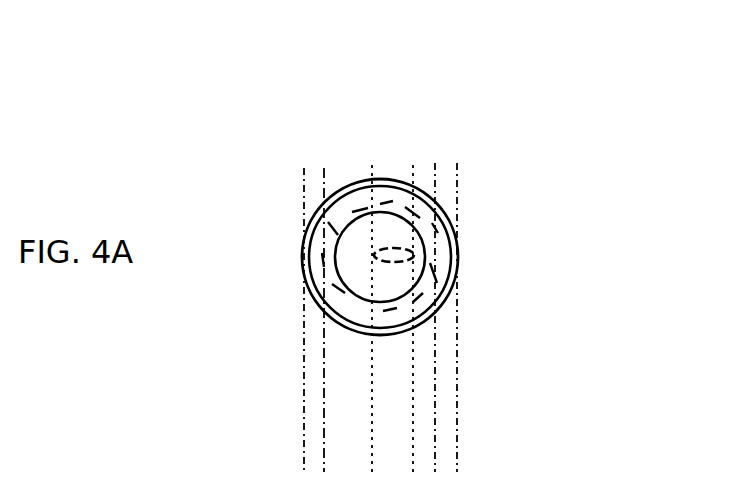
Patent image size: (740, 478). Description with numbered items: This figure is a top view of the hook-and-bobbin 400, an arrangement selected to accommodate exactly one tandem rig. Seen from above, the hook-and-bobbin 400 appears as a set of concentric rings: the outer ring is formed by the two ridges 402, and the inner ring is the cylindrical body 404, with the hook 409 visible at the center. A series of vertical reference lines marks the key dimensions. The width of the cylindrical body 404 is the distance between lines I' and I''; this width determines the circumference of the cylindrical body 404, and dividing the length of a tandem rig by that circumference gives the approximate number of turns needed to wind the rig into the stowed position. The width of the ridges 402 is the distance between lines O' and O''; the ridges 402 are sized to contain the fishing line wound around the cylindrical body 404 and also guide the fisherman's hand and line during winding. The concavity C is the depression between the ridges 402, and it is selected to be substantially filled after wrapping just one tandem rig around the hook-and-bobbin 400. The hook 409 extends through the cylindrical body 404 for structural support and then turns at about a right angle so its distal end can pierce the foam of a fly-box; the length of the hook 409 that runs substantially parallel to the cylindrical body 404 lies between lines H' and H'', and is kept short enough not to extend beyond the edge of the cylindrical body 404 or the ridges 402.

The hook-and-bobbin 400 is at (404, 310).
The ridges 402 is at (323, 288).
The cylindrical body 404 is at (304, 259).
The hook 409 is at (314, 344).
The ridge width line O' is at (256, 133).
The cylindrical body width line I' is at (280, 104).
The hook length line H' is at (332, 93).
The hook length line H'' is at (384, 85).
The cylindrical body width line I'' is at (424, 89).
The concavity C is at (435, 163).
The ridge width line O'' is at (535, 121).